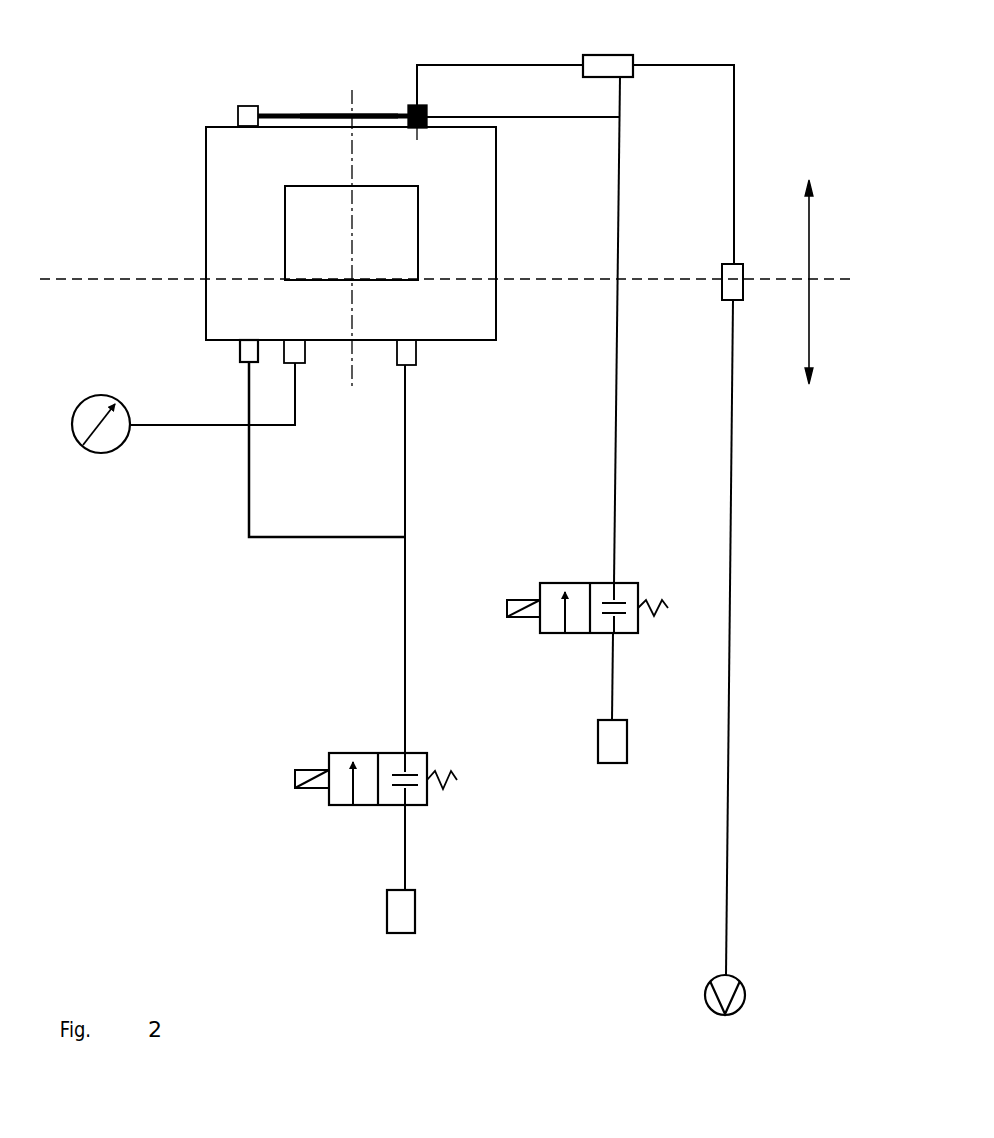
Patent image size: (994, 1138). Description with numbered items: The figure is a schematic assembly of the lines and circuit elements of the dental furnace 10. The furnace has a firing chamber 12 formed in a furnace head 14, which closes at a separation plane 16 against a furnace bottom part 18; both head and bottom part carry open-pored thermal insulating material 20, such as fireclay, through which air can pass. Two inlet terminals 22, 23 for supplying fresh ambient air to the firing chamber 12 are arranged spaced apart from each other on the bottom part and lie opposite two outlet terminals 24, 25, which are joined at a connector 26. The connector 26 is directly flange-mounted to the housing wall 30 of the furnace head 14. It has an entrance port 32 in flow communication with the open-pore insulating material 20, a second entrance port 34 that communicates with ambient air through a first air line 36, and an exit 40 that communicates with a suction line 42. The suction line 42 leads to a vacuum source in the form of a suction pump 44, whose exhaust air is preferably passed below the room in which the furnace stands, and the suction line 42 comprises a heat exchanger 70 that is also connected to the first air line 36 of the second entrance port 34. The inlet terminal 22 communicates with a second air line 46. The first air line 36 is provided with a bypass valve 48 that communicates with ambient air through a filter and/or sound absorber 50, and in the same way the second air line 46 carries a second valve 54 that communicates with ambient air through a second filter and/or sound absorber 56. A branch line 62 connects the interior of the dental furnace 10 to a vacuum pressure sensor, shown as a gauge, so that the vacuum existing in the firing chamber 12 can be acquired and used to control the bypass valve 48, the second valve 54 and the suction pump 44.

The dental furnace 10 is at (238, 70).
The firing chamber 12 is at (300, 228).
The furnace head 14 is at (485, 182).
The separation plane 16 is at (74, 278).
The furnace bottom part 18 is at (216, 313).
The thermal insulating material 20 is at (487, 232).
The inlet terminal 22 is at (418, 356).
The inlet terminal 23 is at (239, 356).
The outlet terminal 24 is at (419, 136).
The outlet terminal 25 is at (238, 113).
The connector 26 is at (405, 104).
The housing wall 30 is at (497, 257).
The entrance port 32 is at (396, 113).
The second entrance port 34 is at (430, 113).
The first air line 36 is at (614, 450).
The exit 40 is at (410, 102).
The suction line 42 is at (735, 123).
The suction pump 44 is at (706, 996).
The second air line 46 is at (405, 485).
The bypass valve 48 is at (625, 583).
The filter and/or sound absorber 50 is at (604, 743).
The second valve 54 is at (368, 760).
The second filter and/or sound absorber 56 is at (392, 915).
The branch line 62 is at (228, 432).
The heat exchanger 70 is at (604, 58).